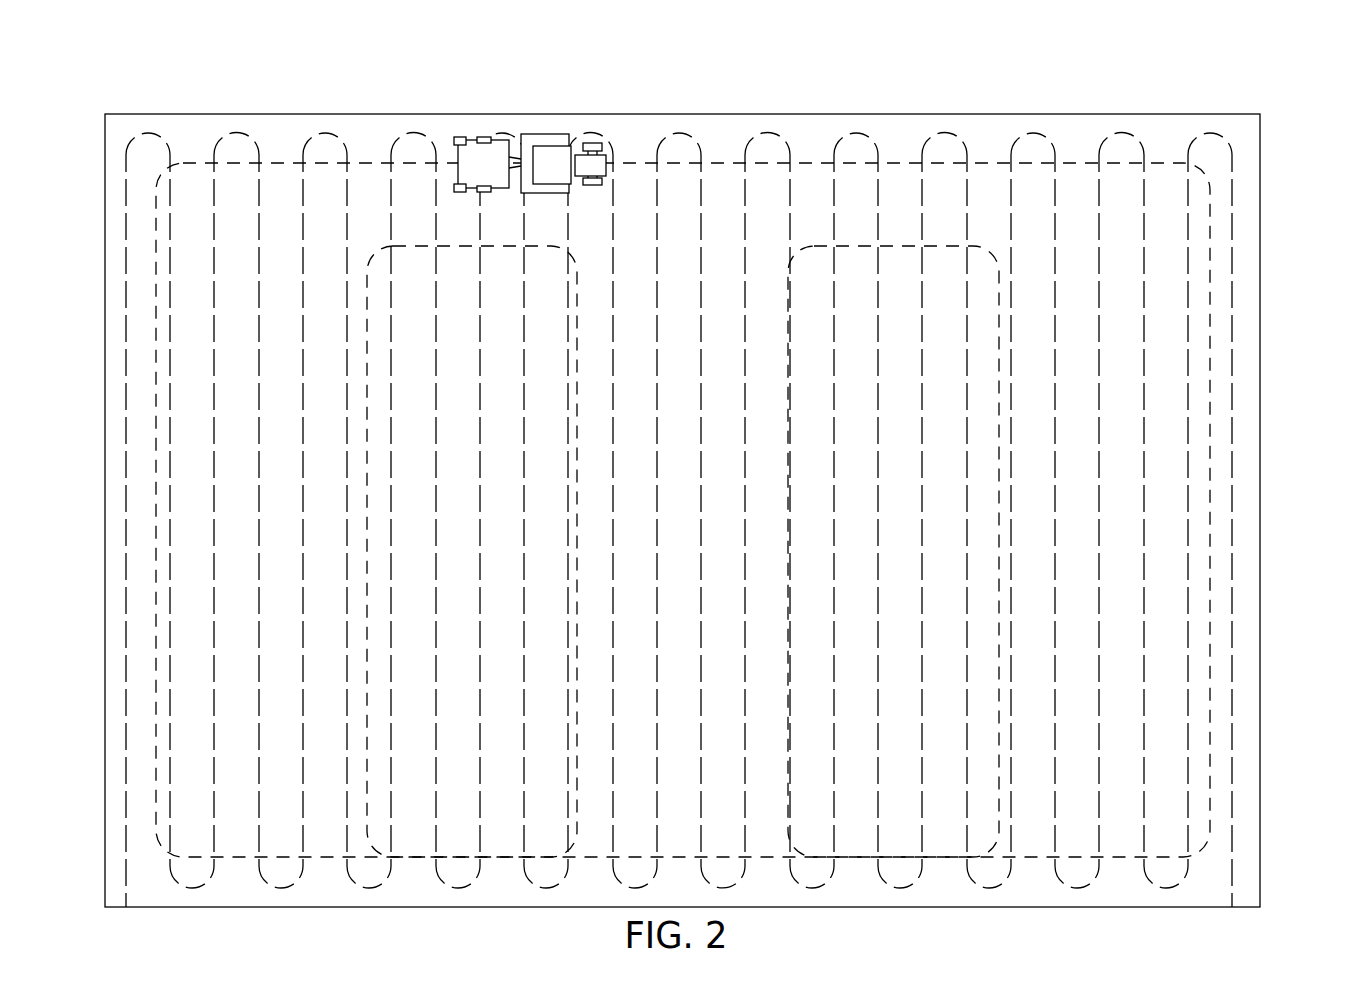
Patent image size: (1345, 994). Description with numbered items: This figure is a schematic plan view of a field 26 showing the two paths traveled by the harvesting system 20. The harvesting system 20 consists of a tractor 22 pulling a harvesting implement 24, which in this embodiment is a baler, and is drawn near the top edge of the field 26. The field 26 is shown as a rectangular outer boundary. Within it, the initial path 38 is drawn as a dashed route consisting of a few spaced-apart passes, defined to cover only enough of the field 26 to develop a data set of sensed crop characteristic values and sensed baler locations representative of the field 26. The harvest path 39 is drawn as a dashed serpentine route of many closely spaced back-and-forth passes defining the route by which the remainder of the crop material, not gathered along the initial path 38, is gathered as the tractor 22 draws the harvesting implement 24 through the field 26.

The harvesting system 20 is at (533, 111).
The tractor 22 is at (553, 157).
The harvesting implement 24 is at (483, 157).
The field 26 is at (1020, 114).
The initial path 38 is at (1212, 290).
The harvest path 39 is at (1113, 133).